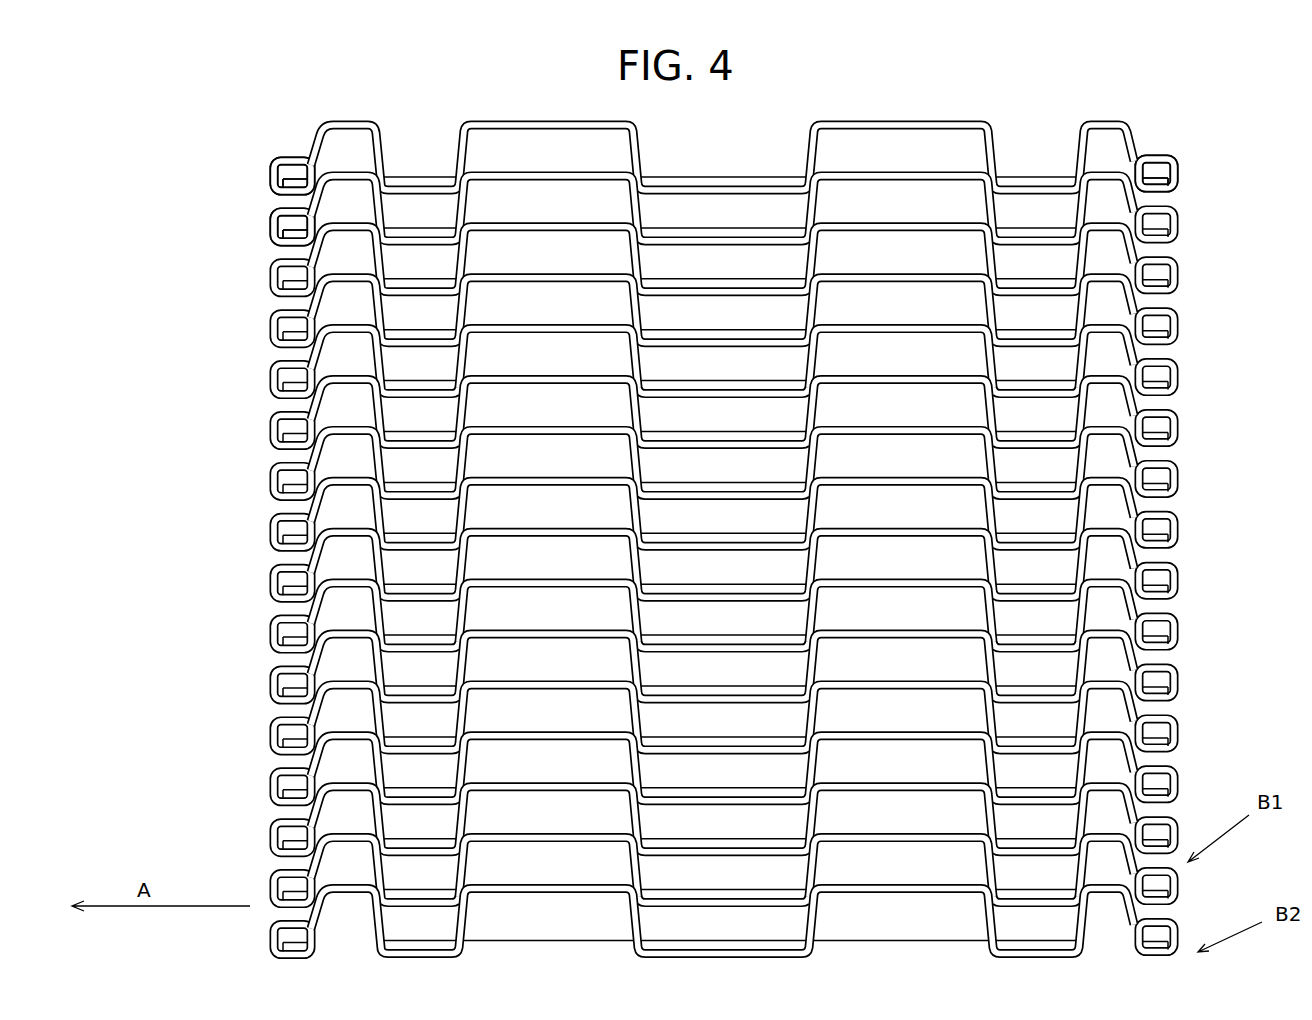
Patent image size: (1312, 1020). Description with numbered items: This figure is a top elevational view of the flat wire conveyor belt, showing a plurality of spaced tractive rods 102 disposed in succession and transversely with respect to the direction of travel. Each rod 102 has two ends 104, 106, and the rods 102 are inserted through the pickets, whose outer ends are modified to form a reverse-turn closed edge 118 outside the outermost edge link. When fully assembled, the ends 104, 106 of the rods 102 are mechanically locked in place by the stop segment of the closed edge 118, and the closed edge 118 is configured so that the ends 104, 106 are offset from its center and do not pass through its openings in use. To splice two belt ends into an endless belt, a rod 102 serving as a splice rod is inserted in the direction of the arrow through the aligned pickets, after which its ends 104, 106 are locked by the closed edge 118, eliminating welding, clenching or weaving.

The tractive rod 102 is at (708, 180).
The rod end 104 is at (288, 184).
The rod end 106 is at (1160, 178).
The reverse-turn closed edge 118 is at (269, 229).